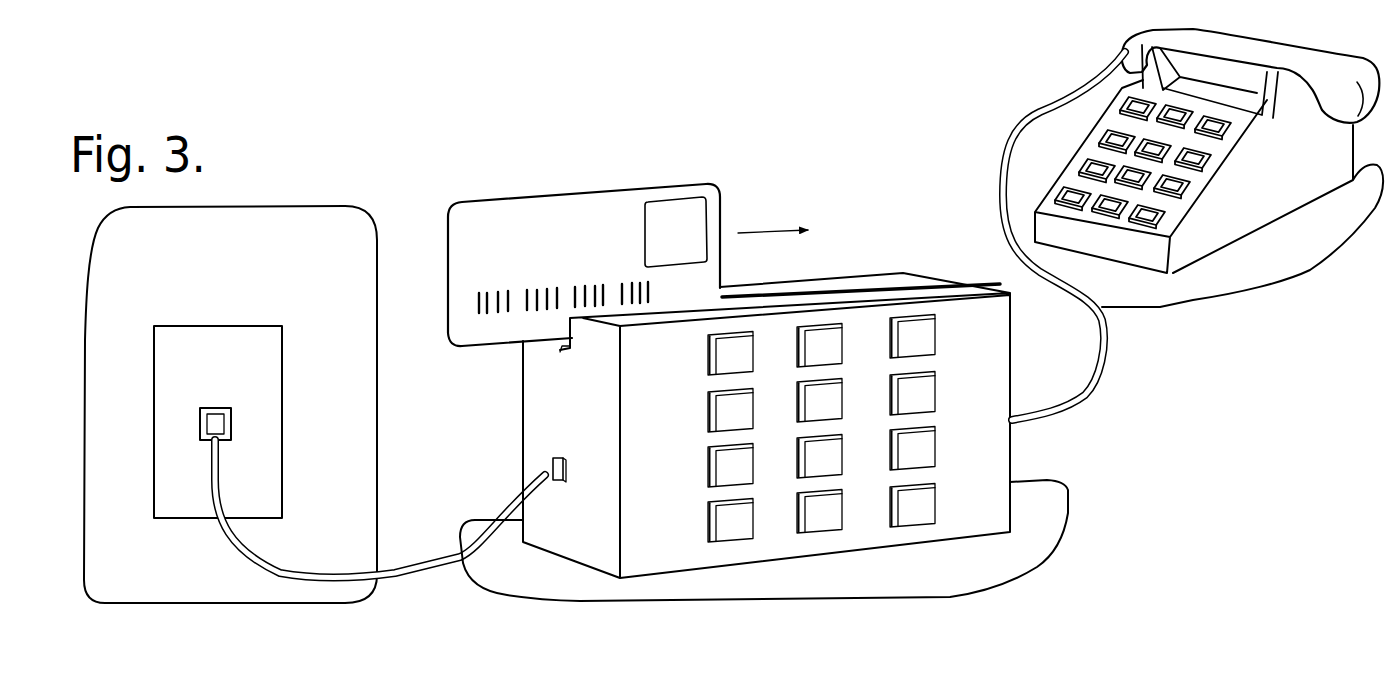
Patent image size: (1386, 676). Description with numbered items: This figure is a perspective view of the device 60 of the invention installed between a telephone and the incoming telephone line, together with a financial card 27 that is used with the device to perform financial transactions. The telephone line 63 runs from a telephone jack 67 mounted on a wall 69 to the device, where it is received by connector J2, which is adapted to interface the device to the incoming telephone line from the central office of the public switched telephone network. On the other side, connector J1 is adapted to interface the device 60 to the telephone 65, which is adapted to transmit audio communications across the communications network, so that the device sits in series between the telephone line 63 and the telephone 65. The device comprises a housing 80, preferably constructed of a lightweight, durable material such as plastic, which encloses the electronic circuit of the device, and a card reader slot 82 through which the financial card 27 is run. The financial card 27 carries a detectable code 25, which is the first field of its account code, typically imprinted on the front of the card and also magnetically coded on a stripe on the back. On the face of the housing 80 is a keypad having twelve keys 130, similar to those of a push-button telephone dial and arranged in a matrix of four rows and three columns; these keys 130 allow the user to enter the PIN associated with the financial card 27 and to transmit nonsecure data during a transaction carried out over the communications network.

The financial card 27 is at (582, 251).
The detectable code 25 is at (480, 308).
The card reader slot 82 is at (568, 348).
The communications connector J2 is at (549, 458).
The device 60 is at (789, 423).
The housing 80 is at (643, 540).
The keys 130 is at (733, 542).
The telephone line 63 is at (428, 580).
The telephone jack 67 is at (205, 424).
The wall 69 is at (188, 580).
The telephone 65 is at (1253, 210).
The communications connector J1 is at (1019, 437).